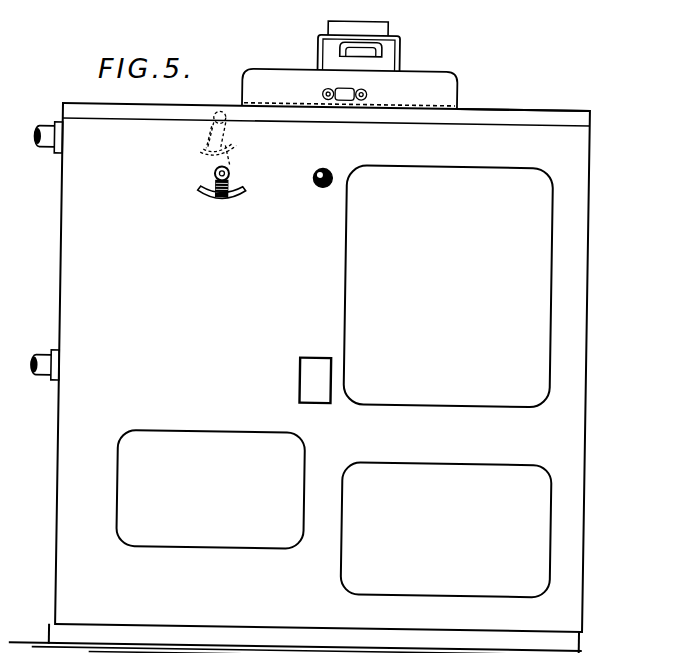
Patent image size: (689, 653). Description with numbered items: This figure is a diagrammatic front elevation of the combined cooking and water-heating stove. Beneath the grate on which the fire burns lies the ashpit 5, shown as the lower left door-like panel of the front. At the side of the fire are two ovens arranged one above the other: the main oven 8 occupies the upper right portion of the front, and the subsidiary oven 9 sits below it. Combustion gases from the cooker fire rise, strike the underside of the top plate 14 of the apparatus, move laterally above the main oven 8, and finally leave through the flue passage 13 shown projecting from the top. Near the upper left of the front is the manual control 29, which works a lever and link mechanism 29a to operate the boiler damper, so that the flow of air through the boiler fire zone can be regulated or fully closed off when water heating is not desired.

The ashpit 5 is at (210, 489).
The main oven 8 is at (448, 286).
The subsidiary oven 9 is at (446, 529).
The flue passage 13 is at (384, 27).
The top plate 14 is at (497, 108).
The manual control 29 is at (222, 204).
The lever and link mechanism 29a is at (207, 150).